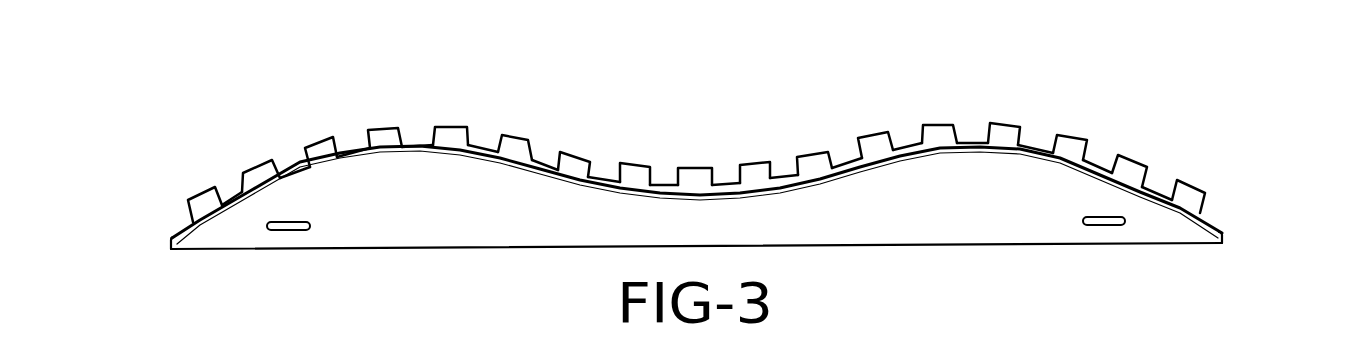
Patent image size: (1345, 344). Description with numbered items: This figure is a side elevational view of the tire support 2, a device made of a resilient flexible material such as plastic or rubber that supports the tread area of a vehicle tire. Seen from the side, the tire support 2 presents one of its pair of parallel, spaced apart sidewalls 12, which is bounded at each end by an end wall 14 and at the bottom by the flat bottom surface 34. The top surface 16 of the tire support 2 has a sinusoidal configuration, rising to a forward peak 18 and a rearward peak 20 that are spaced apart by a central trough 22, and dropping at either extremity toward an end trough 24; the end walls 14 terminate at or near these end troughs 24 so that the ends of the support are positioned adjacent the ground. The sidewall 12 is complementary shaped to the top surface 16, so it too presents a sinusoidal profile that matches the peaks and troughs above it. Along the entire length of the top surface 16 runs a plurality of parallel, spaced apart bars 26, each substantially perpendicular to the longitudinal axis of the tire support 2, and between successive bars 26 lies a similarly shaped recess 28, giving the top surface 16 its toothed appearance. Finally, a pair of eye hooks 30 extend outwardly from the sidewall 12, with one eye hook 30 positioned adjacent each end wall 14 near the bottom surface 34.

The tire support 2 is at (1112, 130).
The sidewall 12 is at (413, 218).
The end wall 14 is at (177, 237).
The top surface 16 is at (752, 163).
The forward peak 18 is at (387, 125).
The rearward peak 20 is at (937, 122).
The central trough 22 is at (693, 167).
The end trough 24 is at (198, 195).
The bar 26 is at (517, 142).
The recess 28 is at (483, 147).
The eye hook 30 is at (285, 230).
The bottom surface 34 is at (1157, 243).